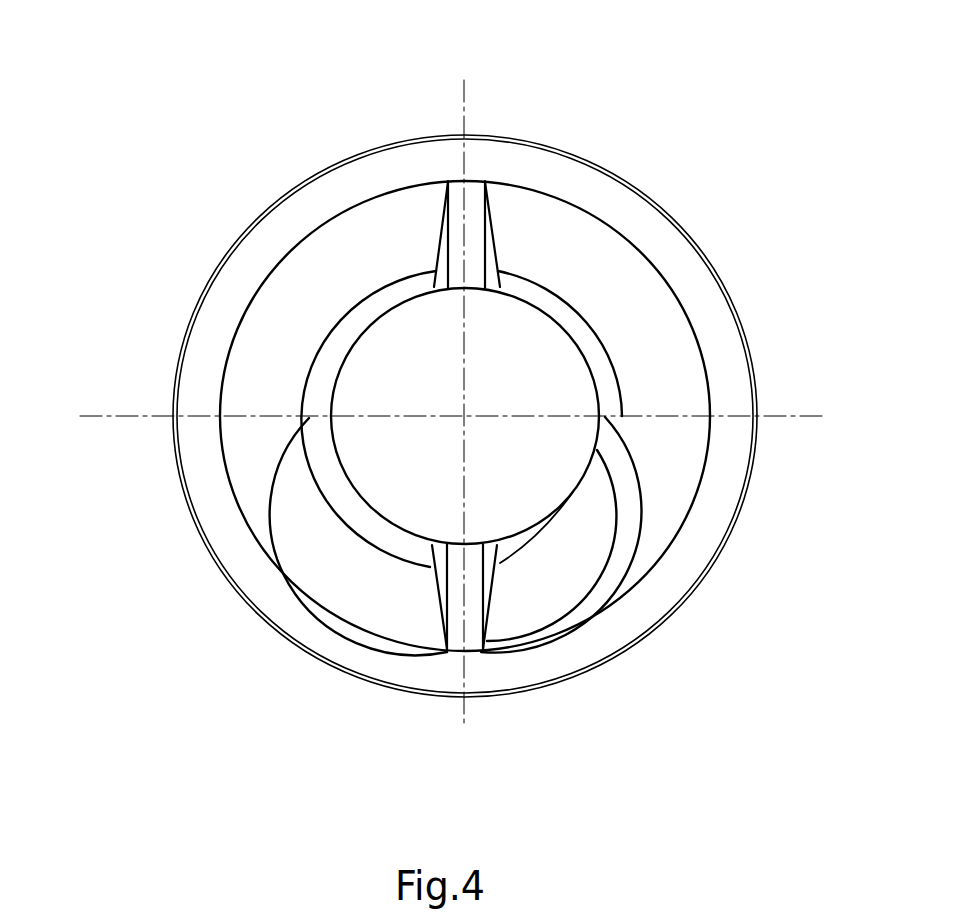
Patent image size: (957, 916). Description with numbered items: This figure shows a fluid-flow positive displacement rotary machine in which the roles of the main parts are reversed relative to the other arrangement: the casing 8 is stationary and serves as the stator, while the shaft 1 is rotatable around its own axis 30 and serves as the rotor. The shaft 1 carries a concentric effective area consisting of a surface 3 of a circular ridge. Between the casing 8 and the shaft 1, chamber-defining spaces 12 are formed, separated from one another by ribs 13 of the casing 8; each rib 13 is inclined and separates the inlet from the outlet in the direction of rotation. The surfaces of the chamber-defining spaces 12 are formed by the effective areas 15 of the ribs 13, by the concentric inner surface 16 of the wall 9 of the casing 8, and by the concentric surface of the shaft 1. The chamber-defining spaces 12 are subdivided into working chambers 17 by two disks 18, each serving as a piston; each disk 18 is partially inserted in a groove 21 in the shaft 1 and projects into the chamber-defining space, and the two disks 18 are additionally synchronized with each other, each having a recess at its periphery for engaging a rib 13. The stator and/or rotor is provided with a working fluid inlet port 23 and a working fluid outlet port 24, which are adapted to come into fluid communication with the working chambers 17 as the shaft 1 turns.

The shaft 1 is at (425, 358).
The surface of a circular ridge 3 is at (251, 604).
The casing 8 is at (795, 515).
The wall 9 is at (499, 290).
The chamber-defining spaces 12 is at (725, 165).
The ribs 13 is at (637, 598).
The effective areas of the ribs 15 is at (536, 635).
The concentric inner surface of the wall 16 is at (572, 121).
The working chambers 17 is at (461, 332).
The disk 18 is at (404, 401).
The groove 21 is at (451, 400).
The working fluid inlet port 23 is at (156, 557).
The working fluid outlet port 24 is at (787, 619).
The axis 30 is at (364, 539).